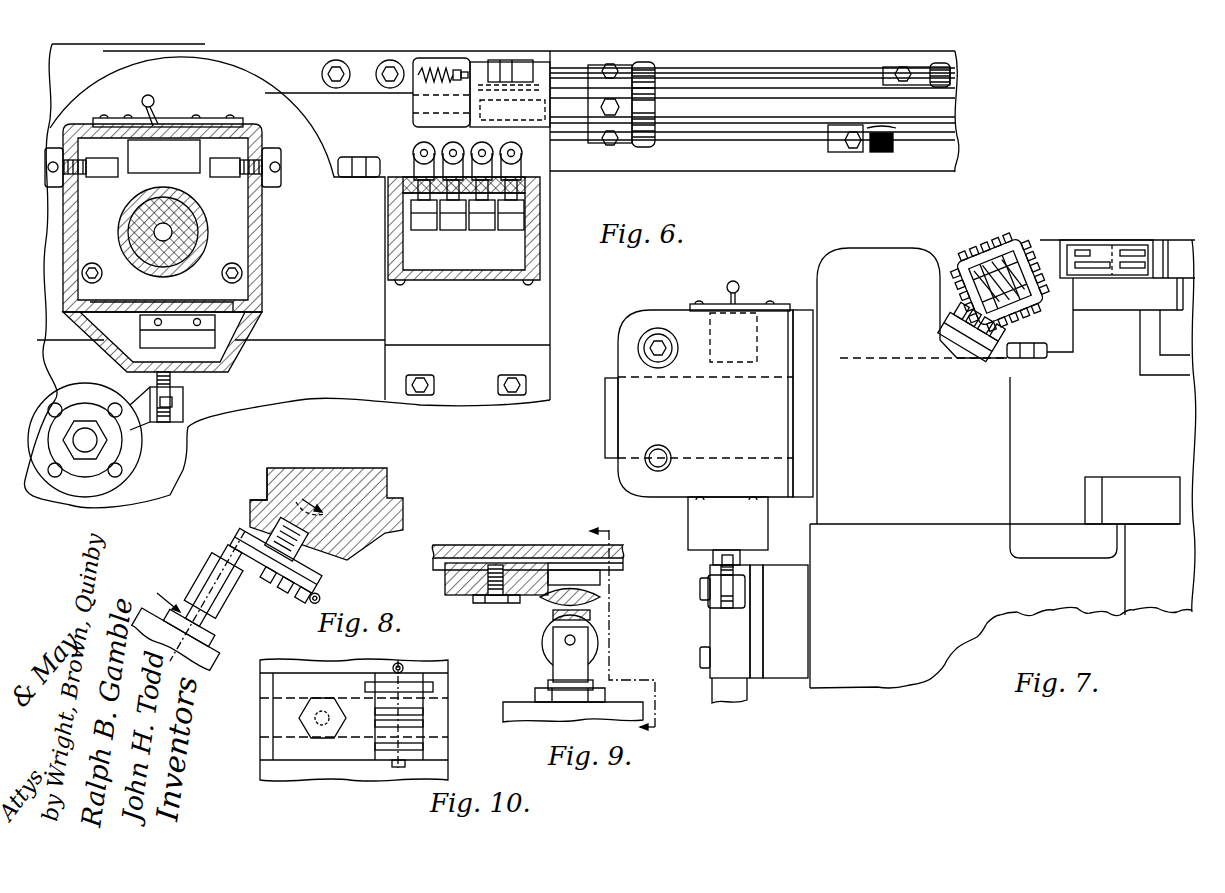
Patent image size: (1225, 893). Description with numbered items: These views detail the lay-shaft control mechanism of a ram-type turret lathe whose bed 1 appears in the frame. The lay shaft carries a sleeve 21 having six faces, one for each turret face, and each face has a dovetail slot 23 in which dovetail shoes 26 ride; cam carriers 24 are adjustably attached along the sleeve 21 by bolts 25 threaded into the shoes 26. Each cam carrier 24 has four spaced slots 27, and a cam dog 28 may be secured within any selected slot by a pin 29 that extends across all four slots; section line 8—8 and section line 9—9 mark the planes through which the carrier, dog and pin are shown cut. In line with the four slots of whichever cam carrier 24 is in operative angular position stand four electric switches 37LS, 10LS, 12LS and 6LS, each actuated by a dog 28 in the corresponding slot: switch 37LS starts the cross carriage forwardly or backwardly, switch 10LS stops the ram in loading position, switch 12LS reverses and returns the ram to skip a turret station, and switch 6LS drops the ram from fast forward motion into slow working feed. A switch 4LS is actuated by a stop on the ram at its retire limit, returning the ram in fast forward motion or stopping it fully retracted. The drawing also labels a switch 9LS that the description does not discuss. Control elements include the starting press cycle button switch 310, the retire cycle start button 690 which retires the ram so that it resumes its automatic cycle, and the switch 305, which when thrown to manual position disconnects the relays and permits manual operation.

In FIG. 7, the bed 1 is at (879, 677).
In FIG. 9, the section line 8— 8 is at (629, 617).
In FIG. 8, the section line 9— 9 is at (238, 548).
In FIG. 6, the sleeve 21 is at (782, 118).
In FIG. 7, the sleeve 21 is at (1012, 252).
In FIG. 8, the sleeve 21 is at (280, 467).
In FIG. 9, the sleeve 21 is at (499, 545).
In FIG. 10, the sleeve 21 is at (422, 660).
In FIG. 8, the dovetail slots 23 is at (267, 490).
In FIG. 9, the dovetail slots 23 is at (557, 562).
In FIG. 10, the dovetail slots 23 is at (435, 712).
In FIG. 6, the cam carriers 24 is at (642, 145).
In FIG. 8, the cam carriers 24 is at (240, 540).
In FIG. 9, the cam carriers 24 is at (470, 545).
In FIG. 10, the cam carriers 24 is at (282, 708).
In FIG. 6, the bolts 25 is at (603, 141).
In FIG. 9, the bolts 25 is at (495, 604).
In FIG. 10, the bolts 25 is at (325, 740).
In FIG. 8, the dovetail shoes 26 is at (322, 550).
In FIG. 9, the dovetail shoes 26 is at (491, 560).
In FIG. 8, the slots 27 is at (275, 592).
In FIG. 9, the slots 27 is at (600, 585).
In FIG. 10, the slots 27 is at (415, 746).
In FIG. 8, the cam dog 28 is at (250, 580).
In FIG. 9, the cam dog 28 is at (585, 615).
In FIG. 10, the cam dog 28 is at (365, 687).
In FIG. 8, the pin 29 is at (312, 603).
In FIG. 9, the pin 29 is at (600, 599).
In FIG. 10, the pin 29 is at (396, 770).
In FIG. 6, the switch 305 is at (156, 103).
In FIG. 7, the switch 305 is at (737, 283).
In FIG. 6, the starting press cycle button switch 310 is at (57, 178).
In FIG. 6, the retire cycle start button 690 is at (270, 180).
In FIG. 6, the switch 4LS is at (465, 98).
In FIG. 6, the switch 6LS is at (511, 181).
In FIG. 7, the switch 6LS is at (985, 362).
In FIG. 6, the limit switch 9LS is at (177, 331).
In FIG. 7, the limit switch 9LS is at (710, 566).
In FIG. 6, the switch 10LS is at (452, 181).
In FIG. 7, the switch 10LS is at (950, 345).
In FIG. 6, the switch 12LS is at (482, 181).
In FIG. 7, the switch 12LS is at (968, 350).
In FIG. 6, the switch 37LS is at (416, 181).
In FIG. 7, the switch 37LS is at (947, 328).